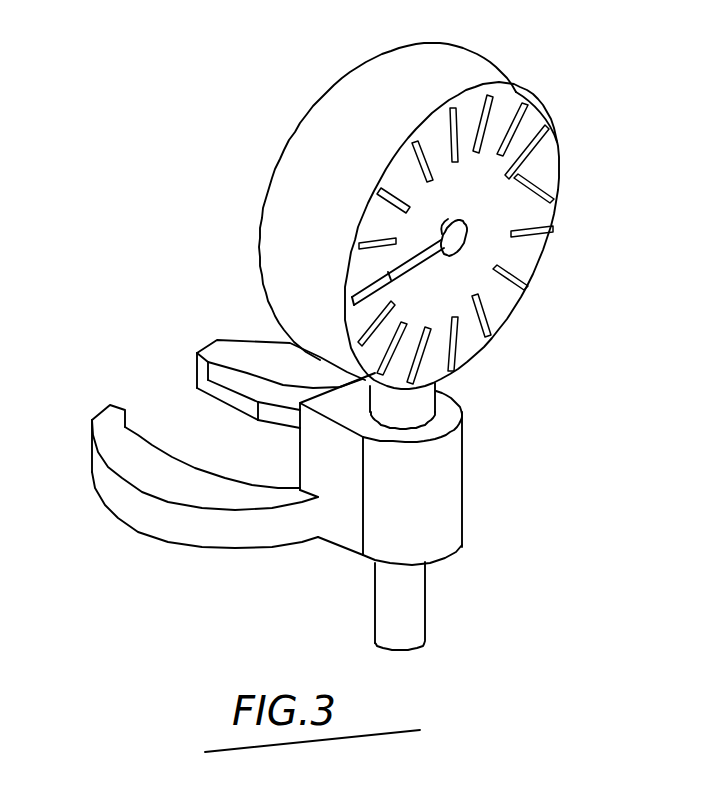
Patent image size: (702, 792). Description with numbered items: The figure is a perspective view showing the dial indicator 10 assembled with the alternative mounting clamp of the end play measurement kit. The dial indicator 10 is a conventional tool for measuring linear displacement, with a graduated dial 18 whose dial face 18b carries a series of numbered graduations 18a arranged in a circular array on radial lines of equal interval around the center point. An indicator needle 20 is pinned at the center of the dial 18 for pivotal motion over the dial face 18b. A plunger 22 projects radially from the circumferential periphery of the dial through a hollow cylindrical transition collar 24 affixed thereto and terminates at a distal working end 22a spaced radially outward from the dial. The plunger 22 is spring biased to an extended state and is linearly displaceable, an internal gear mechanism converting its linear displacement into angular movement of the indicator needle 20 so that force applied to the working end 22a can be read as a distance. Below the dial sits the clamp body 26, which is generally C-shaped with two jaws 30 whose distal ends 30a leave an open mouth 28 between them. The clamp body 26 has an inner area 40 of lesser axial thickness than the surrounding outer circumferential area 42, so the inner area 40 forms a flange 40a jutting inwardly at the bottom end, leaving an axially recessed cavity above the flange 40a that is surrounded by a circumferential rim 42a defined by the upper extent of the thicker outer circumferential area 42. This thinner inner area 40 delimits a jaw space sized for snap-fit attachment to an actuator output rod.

The dial indicator 10 is at (542, 66).
The graduated dial 18 is at (434, 68).
The graduations 18a is at (537, 148).
The dial face 18b is at (465, 272).
The indicator needle 20 is at (418, 262).
The plunger 22 is at (417, 602).
The distal working end 22a is at (417, 650).
The transition collar 24 is at (412, 410).
The clamp body 26 is at (202, 520).
The open mouth 28 is at (146, 396).
The jaws 30 is at (247, 347).
The distal ends 30a is at (193, 378).
The inner area 40 is at (250, 400).
The flange 40a is at (238, 420).
The outer circumferential area 42 is at (102, 479).
The circumferential rim 42a is at (103, 437).